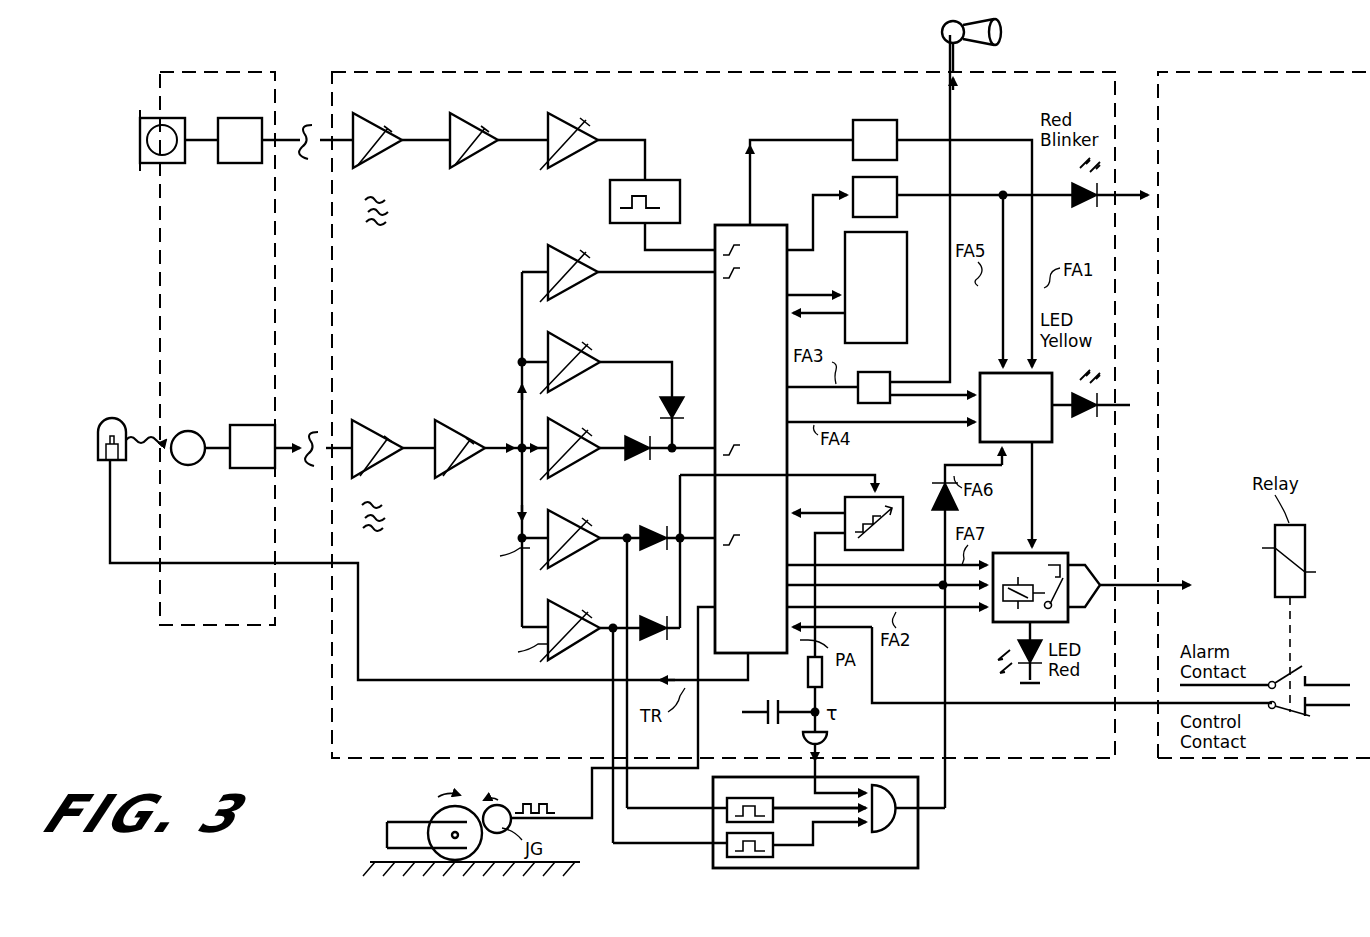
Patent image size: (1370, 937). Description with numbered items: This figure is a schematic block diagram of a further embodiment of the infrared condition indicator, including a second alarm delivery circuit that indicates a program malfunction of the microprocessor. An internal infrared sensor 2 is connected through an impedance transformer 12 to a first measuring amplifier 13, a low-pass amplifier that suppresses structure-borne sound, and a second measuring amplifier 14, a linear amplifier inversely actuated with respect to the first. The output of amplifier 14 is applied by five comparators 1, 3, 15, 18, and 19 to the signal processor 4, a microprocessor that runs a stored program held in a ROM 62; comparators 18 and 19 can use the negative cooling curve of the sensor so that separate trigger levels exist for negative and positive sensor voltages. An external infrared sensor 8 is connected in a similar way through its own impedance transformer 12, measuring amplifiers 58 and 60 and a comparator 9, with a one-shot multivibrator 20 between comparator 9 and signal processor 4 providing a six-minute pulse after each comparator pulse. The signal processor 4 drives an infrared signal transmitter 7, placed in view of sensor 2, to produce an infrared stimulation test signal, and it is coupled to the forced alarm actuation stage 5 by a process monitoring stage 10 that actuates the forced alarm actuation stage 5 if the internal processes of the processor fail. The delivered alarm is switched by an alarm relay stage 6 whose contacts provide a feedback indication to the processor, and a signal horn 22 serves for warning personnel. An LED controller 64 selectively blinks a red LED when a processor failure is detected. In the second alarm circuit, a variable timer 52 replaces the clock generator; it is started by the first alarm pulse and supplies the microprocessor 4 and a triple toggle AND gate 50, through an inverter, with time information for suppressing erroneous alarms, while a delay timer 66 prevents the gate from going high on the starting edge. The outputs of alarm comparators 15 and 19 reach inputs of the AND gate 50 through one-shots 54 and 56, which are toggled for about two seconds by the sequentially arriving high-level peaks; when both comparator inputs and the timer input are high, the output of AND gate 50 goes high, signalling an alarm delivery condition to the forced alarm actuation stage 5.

The comparator 1 is at (559, 250).
The infrared sensor 2 is at (184, 430).
The comparator 3 is at (598, 366).
The signal processor 4 is at (708, 310).
The forced alarm actuation stage 5 is at (984, 374).
The relay output stage 6 is at (1052, 551).
The infrared signal transmitter 7 is at (106, 460).
The external infrared sensor 8 is at (149, 120).
The comparator 9 is at (574, 130).
The process monitoring stage 10 is at (868, 120).
The impedance transformer 12 is at (226, 120).
The first measuring amplifier 13 is at (386, 460).
The second measuring amplifier 14 is at (466, 466).
The comparator 15 is at (576, 522).
The comparator 18 is at (570, 428).
The comparator 19 is at (576, 612).
The one-shot multivibrator 20 is at (653, 178).
The signal horn 22 is at (938, 30).
The toggle AND gate 50 is at (916, 816).
The variable timer 52 is at (886, 494).
The one-shot 54 is at (716, 806).
The one-shot 56 is at (724, 850).
The measuring amplifier 58 is at (382, 130).
The measuring amplifier 60 is at (480, 130).
The ROM 62 is at (908, 326).
The LED controller 64 is at (852, 180).
The delay timer 66 is at (806, 675).